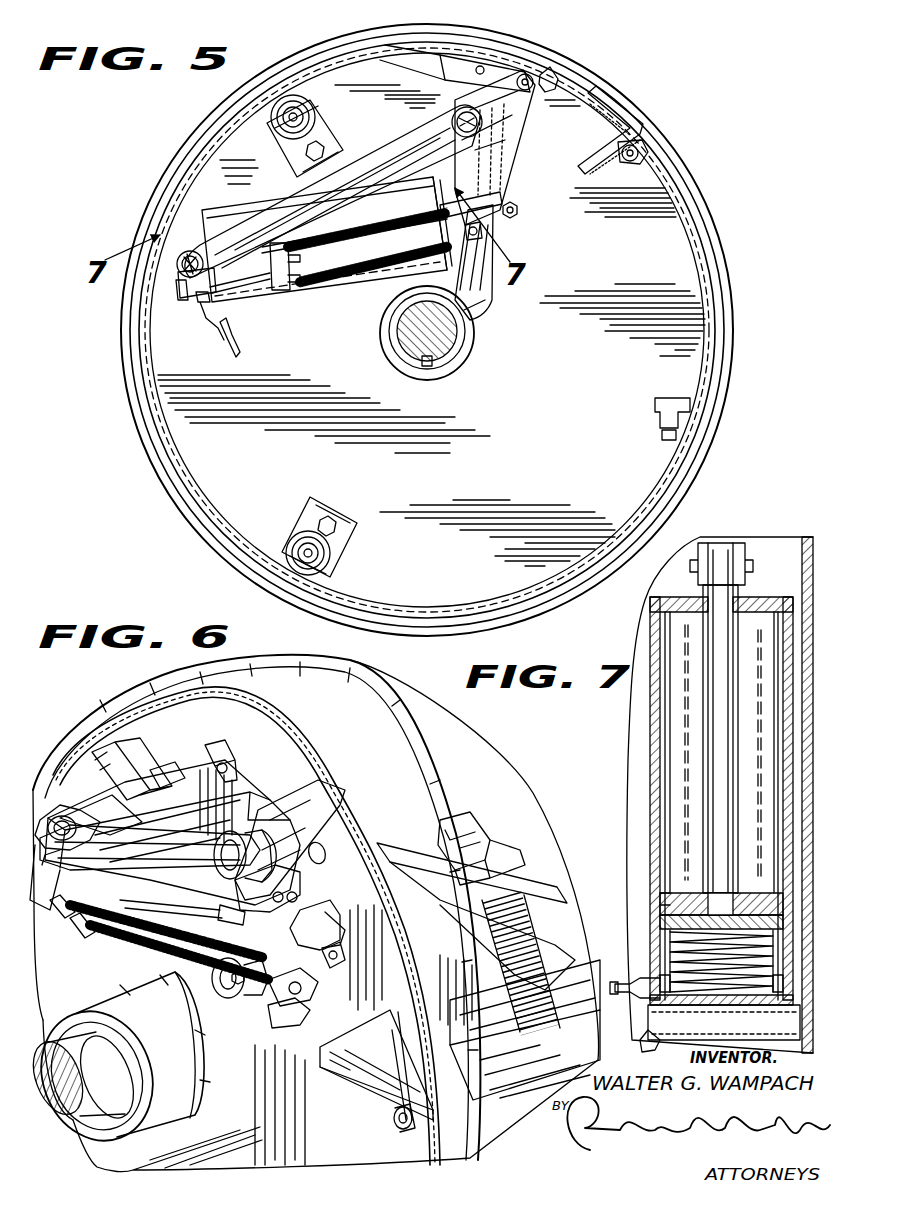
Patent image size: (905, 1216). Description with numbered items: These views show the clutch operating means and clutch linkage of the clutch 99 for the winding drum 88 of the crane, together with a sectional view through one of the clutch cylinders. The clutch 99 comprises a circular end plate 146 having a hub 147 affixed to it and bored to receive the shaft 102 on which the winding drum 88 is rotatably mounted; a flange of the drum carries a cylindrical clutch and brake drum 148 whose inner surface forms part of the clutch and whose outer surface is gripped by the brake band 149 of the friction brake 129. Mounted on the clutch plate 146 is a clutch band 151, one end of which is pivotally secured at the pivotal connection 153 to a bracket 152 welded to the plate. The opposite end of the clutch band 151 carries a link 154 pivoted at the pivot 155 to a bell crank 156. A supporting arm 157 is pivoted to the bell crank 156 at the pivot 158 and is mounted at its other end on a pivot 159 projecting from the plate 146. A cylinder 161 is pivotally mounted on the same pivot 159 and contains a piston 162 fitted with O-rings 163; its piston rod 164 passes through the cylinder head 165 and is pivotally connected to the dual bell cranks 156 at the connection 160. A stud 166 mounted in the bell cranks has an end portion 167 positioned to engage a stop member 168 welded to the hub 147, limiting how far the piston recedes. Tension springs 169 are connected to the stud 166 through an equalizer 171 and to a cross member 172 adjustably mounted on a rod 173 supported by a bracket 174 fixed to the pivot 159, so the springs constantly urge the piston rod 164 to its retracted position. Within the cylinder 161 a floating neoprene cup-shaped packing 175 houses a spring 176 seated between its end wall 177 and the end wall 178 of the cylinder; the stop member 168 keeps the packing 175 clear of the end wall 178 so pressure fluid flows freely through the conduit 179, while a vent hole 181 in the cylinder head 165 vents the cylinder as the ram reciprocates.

In FIG. 6, the winding drum 88 is at (462, 752).
In FIG. 5, the clutch 99 is at (147, 194).
In FIG. 6, the clutch 99 is at (80, 772).
In FIG. 5, the shaft 102 is at (408, 340).
In FIG. 6, the shaft 102 is at (203, 1025).
In FIG. 6, the brake 129 is at (500, 832).
In FIG. 5, the circular end plate 146 is at (431, 325).
In FIG. 6, the circular end plate 146 is at (319, 1117).
In FIG. 7, the circular end plate 146 is at (808, 537).
In FIG. 5, the hub 147 is at (414, 374).
In FIG. 6, the hub 147 is at (238, 1035).
In FIG. 6, the clutch and brake drum 148 is at (553, 957).
In FIG. 6, the brake band 149 is at (256, 907).
In FIG. 5, the clutch band 151 is at (182, 466).
In FIG. 6, the clutch band 151 is at (215, 758).
In FIG. 5, the bracket 152 is at (620, 128).
In FIG. 6, the bracket 152 is at (372, 1070).
In FIG. 5, the pivotal connection 153 is at (650, 150).
In FIG. 6, the pivotal connection 153 is at (396, 1122).
In FIG. 5, the link 154 is at (462, 100).
In FIG. 6, the link 154 is at (270, 775).
In FIG. 5, the pivot 155 is at (530, 78).
In FIG. 6, the pivot 155 is at (322, 845).
In FIG. 5, the bell crank 156 is at (512, 127).
In FIG. 6, the bell crank 156 is at (285, 820).
In FIG. 7, the bell crank 156 is at (740, 543).
In FIG. 5, the supporting arm 157 is at (393, 148).
In FIG. 6, the supporting arm 157 is at (150, 847).
In FIG. 5, the pivot 158 is at (458, 112).
In FIG. 6, the pivot 158 is at (225, 845).
In FIG. 5, the pivot 159 is at (178, 268).
In FIG. 6, the pivot 159 is at (72, 813).
In FIG. 7, the pivot 159 is at (645, 1045).
In FIG. 5, the pivotal connection 160 is at (447, 233).
In FIG. 6, the pivotal connection 160 is at (218, 906).
In FIG. 7, the pivotal connection 160 is at (745, 565).
In FIG. 5, the cylinder 161 is at (237, 203).
In FIG. 6, the cylinder 161 is at (145, 820).
In FIG. 7, the cylinder 161 is at (655, 783).
In FIG. 7, the piston 162 is at (680, 893).
In FIG. 7, the O-rings 163 is at (660, 900).
In FIG. 6, the piston rod 164 is at (262, 872).
In FIG. 7, the piston rod 164 is at (722, 797).
In FIG. 7, the cylinder head 165 is at (686, 612).
In FIG. 5, the stud 166 is at (516, 214).
In FIG. 6, the stud 166 is at (318, 972).
In FIG. 6, the end portion 167 is at (345, 940).
In FIG. 5, the stop member 168 is at (492, 300).
In FIG. 6, the stop member 168 is at (334, 917).
In FIG. 5, the tension springs 169 is at (348, 255).
In FIG. 6, the tension springs 169 is at (143, 968).
In FIG. 5, the equalizer 171 is at (480, 236).
In FIG. 6, the equalizer 171 is at (212, 988).
In FIG. 5, the cross member 172 is at (274, 292).
In FIG. 5, the rod 173 is at (204, 302).
In FIG. 5, the bracket 174 is at (182, 302).
In FIG. 7, the cup-shaped packing 175 is at (665, 935).
In FIG. 7, the spring 176 is at (668, 950).
In FIG. 7, the end wall 177 is at (700, 925).
In FIG. 7, the end wall 178 is at (697, 1007).
In FIG. 7, the conduit 179 is at (622, 982).
In FIG. 7, the vent hole 181 is at (758, 615).